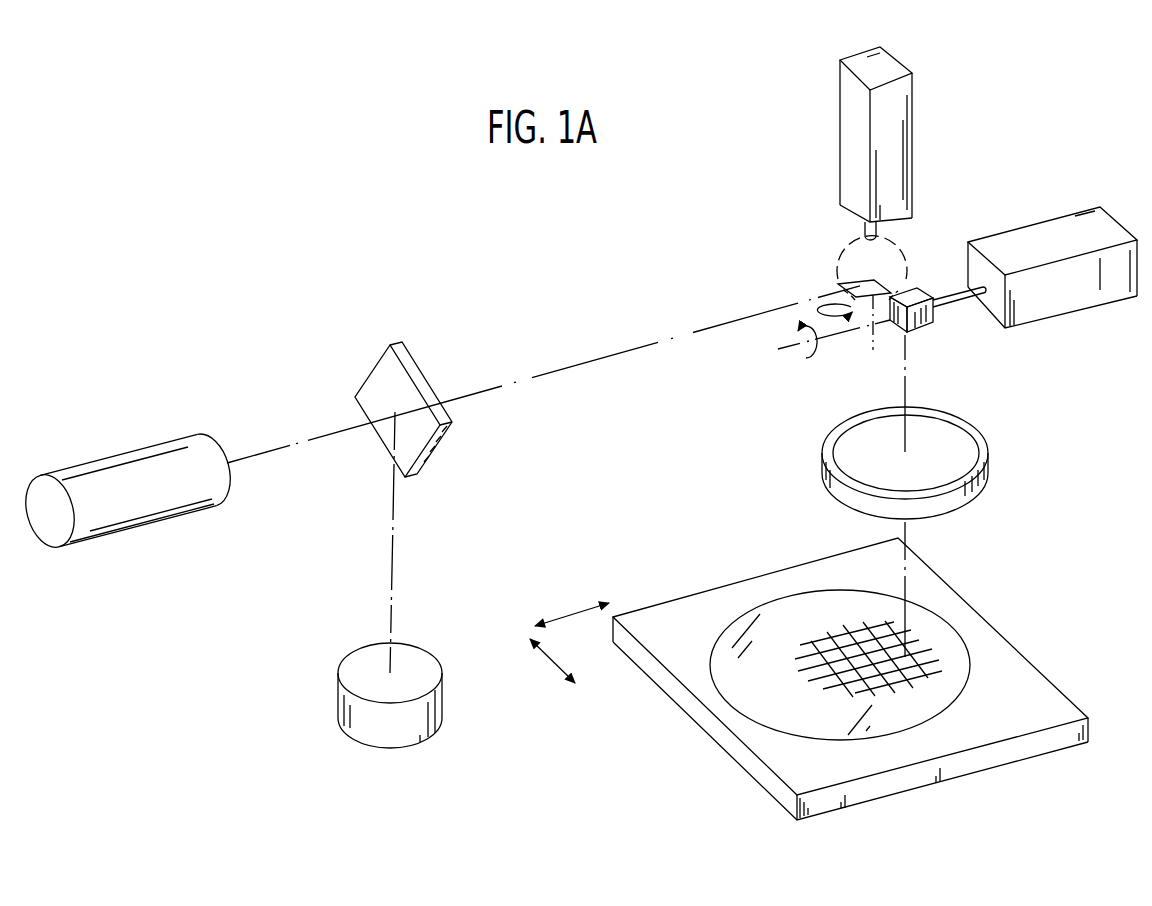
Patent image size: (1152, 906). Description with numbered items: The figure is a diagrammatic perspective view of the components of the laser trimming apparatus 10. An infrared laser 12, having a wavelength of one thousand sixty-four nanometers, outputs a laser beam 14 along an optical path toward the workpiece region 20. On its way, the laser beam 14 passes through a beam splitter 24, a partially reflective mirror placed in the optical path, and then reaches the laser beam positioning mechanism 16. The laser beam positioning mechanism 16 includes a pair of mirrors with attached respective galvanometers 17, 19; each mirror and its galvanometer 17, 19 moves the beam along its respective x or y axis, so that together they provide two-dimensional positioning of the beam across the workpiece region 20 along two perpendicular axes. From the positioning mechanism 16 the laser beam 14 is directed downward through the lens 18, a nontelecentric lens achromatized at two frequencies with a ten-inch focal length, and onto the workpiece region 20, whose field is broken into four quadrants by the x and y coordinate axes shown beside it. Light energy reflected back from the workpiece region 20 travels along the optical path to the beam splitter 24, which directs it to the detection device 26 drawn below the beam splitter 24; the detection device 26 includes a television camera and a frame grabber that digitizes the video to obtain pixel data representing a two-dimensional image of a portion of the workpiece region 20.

The laser trimming apparatus 10 is at (302, 225).
The infrared laser 12 is at (160, 524).
The laser beam 14 is at (335, 437).
The laser beam positioning mechanism 16 is at (980, 117).
The galvanometer 17 is at (912, 73).
The lens 18 is at (988, 448).
The galvanometer 19 is at (1028, 226).
The workpiece region 20 is at (760, 727).
The beam splitter 24 is at (357, 393).
The detection device 26 is at (334, 697).